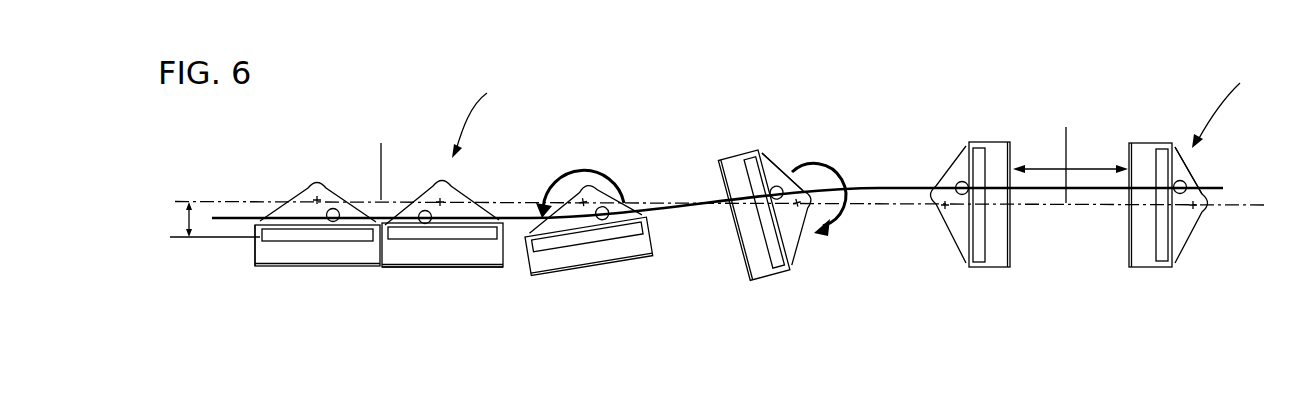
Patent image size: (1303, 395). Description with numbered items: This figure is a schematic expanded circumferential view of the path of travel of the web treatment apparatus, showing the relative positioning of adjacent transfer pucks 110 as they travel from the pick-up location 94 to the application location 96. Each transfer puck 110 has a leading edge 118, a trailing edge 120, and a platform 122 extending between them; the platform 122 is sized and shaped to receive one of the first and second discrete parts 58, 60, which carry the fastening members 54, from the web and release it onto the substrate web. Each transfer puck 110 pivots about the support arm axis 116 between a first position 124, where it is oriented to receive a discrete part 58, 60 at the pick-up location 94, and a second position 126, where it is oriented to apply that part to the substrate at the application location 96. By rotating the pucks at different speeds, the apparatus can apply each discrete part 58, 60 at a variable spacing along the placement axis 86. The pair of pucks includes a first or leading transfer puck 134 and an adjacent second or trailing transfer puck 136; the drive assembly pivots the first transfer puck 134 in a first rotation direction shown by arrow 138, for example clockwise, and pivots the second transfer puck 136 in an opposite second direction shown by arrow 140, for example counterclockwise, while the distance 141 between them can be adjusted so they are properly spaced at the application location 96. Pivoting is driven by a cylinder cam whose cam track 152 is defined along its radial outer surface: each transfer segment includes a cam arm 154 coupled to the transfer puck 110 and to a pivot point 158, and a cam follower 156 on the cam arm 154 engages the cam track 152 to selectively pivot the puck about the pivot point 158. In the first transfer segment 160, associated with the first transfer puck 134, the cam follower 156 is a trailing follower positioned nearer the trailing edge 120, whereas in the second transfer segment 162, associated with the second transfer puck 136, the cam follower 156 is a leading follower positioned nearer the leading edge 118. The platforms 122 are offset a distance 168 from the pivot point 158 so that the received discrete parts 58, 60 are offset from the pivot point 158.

The fastening member 54 is at (273, 233).
The first discrete part 58 is at (447, 251).
The second discrete part 60 is at (330, 238).
The placement axis 86 is at (1238, 207).
The pick-up location 94 is at (383, 143).
The application location 96 is at (1066, 127).
The transfer puck 110 is at (315, 268).
The support arm axis 116 is at (316, 198).
The leading edge 118 is at (382, 242).
The trailing edge 120 is at (256, 249).
The platform 122 is at (292, 257).
The first position 124 is at (485, 117).
The second position 126 is at (1230, 105).
The first transfer puck 134 is at (788, 168).
The second transfer puck 136 is at (558, 274).
The first rotation direction arrow 138 is at (822, 165).
The second rotation direction arrow 140 is at (600, 164).
The distance 141 is at (1088, 165).
The cam track 152 is at (852, 187).
The cam arm 154 is at (445, 180).
The cam follower 156 is at (336, 208).
The pivot point 158 is at (583, 200).
The first transfer segment 160 is at (437, 268).
The second transfer segment 162 is at (275, 268).
The offset distance 168 is at (185, 214).